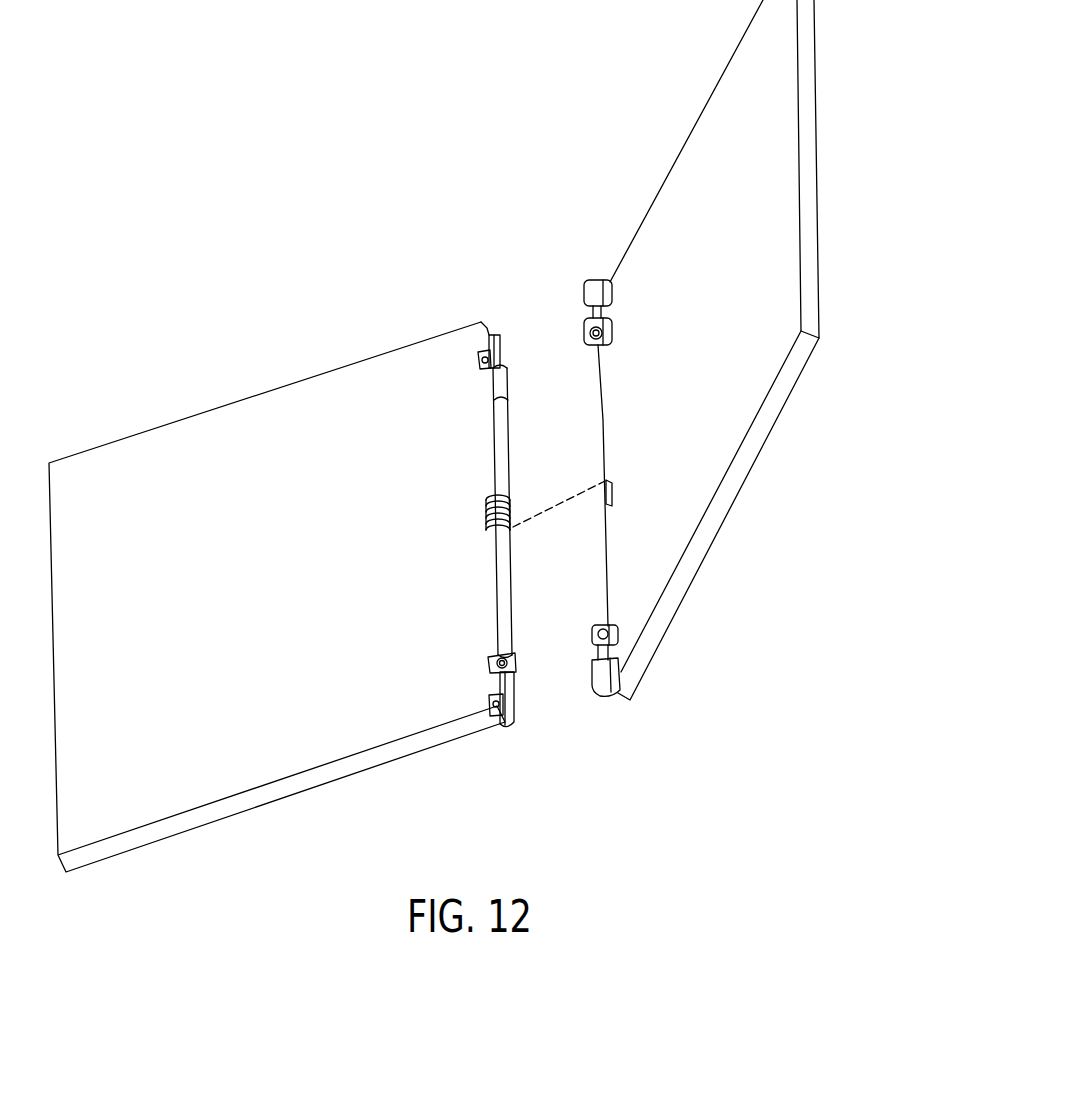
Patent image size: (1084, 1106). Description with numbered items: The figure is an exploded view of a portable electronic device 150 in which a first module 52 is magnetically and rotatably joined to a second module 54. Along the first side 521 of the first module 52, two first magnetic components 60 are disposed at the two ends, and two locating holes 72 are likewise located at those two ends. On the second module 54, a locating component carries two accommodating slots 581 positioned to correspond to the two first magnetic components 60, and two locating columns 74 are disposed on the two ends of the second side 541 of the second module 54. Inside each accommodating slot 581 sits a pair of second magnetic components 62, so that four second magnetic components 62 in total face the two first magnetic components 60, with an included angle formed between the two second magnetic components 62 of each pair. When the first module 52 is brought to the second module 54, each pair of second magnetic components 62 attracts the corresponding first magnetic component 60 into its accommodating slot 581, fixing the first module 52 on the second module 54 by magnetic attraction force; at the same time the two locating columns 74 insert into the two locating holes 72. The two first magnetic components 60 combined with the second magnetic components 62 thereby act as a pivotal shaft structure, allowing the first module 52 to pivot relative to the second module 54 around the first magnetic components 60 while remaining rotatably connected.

The portable electronic device 150 is at (312, 100).
The first module 52 is at (722, 72).
The first side 521 is at (606, 452).
The second module 54 is at (160, 832).
The second side 541 is at (497, 445).
The accommodating slot 581 is at (506, 350).
The first magnetic component 60 is at (597, 306).
The second magnetic component 62 is at (487, 355).
The locating hole 72 is at (598, 346).
The locating column 74 is at (512, 667).